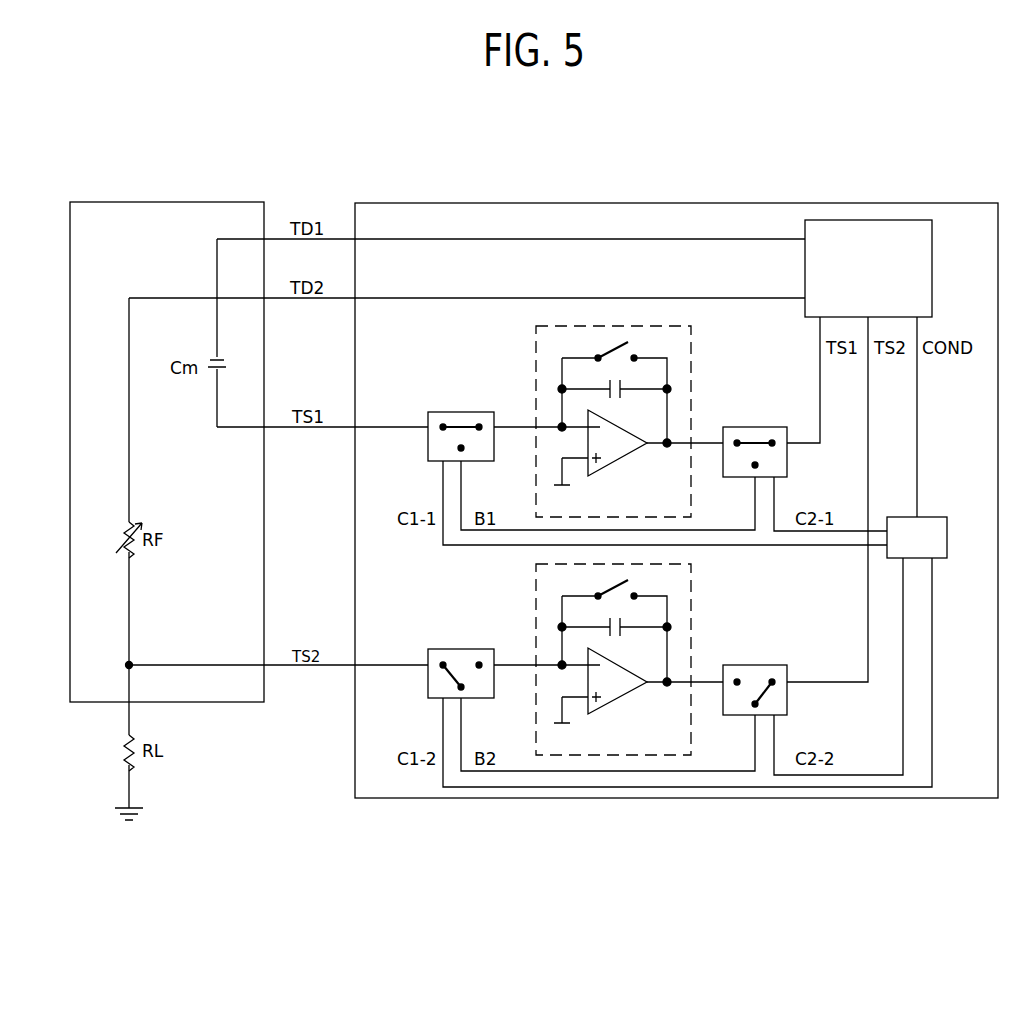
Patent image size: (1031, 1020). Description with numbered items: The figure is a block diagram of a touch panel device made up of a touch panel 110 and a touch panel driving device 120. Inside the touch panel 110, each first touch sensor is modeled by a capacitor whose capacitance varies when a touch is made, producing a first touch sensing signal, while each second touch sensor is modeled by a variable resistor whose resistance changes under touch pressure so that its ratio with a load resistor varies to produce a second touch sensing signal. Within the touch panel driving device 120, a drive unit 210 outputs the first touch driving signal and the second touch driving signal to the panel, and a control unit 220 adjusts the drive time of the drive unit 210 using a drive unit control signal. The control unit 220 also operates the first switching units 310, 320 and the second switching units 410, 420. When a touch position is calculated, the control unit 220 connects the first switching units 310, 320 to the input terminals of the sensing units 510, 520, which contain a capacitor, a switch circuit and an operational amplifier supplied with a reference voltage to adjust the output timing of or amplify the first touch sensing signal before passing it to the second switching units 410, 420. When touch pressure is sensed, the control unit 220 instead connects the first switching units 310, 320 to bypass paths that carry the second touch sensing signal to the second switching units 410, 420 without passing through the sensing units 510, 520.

The touch panel 110 is at (223, 202).
The touch panel driving device 120 is at (543, 203).
The drive unit 210 is at (900, 220).
The control unit 220 is at (937, 517).
The first switching unit 310 is at (445, 412).
The first switching unit 320 is at (445, 649).
The second switching unit 410 is at (755, 427).
The second switching unit 420 is at (755, 665).
The sensing unit 510 is at (691, 348).
The sensing unit 520 is at (691, 586).